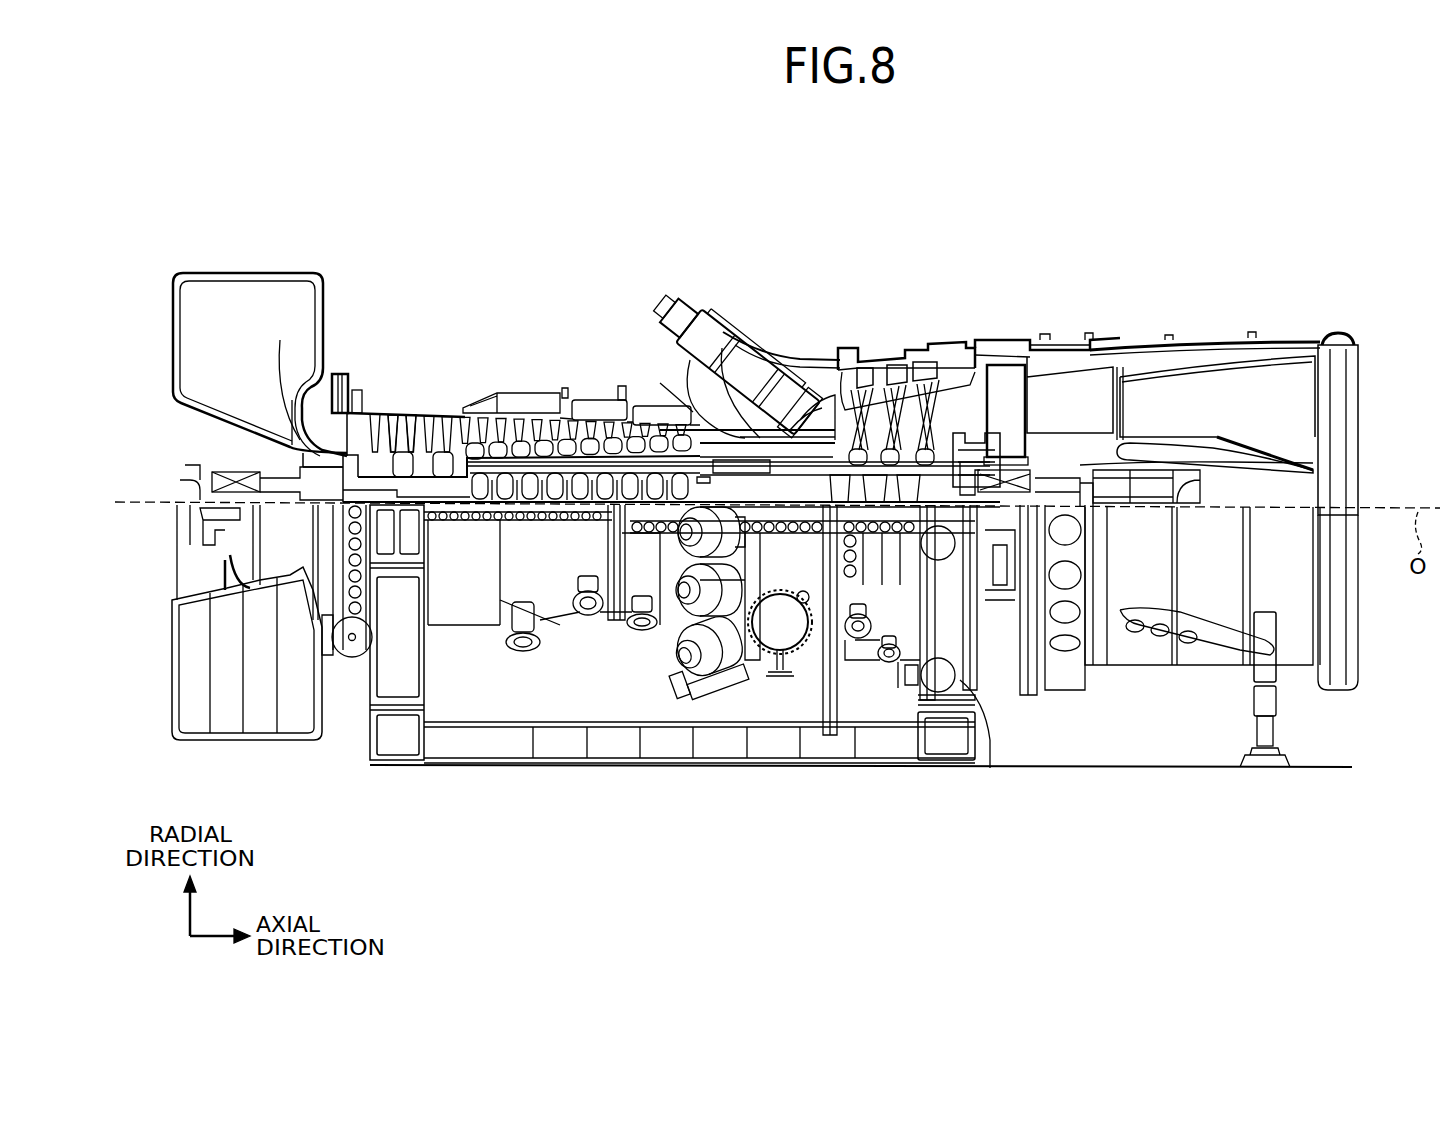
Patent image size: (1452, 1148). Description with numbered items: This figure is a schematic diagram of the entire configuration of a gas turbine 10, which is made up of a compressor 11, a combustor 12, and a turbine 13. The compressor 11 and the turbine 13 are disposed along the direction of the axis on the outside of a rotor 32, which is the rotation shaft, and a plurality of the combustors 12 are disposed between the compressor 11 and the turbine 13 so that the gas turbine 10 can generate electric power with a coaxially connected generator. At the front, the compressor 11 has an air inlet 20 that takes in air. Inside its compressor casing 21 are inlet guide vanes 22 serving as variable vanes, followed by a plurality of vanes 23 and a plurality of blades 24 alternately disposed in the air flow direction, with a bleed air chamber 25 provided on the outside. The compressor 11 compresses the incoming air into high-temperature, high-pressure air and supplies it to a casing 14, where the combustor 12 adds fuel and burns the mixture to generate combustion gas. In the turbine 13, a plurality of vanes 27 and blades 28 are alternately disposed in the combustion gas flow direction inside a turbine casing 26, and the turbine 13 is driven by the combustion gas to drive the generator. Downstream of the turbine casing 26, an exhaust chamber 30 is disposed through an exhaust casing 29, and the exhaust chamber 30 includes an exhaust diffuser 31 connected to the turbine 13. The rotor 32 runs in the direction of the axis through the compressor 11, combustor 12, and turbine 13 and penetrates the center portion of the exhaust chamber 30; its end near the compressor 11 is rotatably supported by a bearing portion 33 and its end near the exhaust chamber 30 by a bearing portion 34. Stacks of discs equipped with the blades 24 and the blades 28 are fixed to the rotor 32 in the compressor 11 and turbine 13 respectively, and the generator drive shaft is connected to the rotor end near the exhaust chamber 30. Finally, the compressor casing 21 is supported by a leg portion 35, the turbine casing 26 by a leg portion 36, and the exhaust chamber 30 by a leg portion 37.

The gas turbine 10 is at (730, 195).
The compressor 11 is at (403, 345).
The combustor 12 is at (700, 305).
The turbine 13 is at (976, 320).
The casing 14 is at (790, 358).
The air inlet 20 is at (185, 340).
The compressor casing 21 is at (394, 414).
The inlet guide vane 22 is at (295, 430).
The vane 23 is at (413, 414).
The blade 24 is at (355, 420).
The bleed air chamber 25 is at (530, 400).
The turbine casing 26 is at (905, 355).
The vane 27 is at (872, 370).
The blade 28 is at (830, 362).
The exhaust casing 29 is at (1022, 345).
The exhaust chamber 30 is at (1270, 340).
The exhaust diffuser 31 is at (1093, 350).
The rotor 32 is at (735, 398).
The bearing portion 33 is at (182, 488).
The bearing portion 34 is at (1318, 450).
The leg portion 35 is at (370, 685).
The leg portion 36 is at (965, 688).
The leg portion 37 is at (1280, 695).